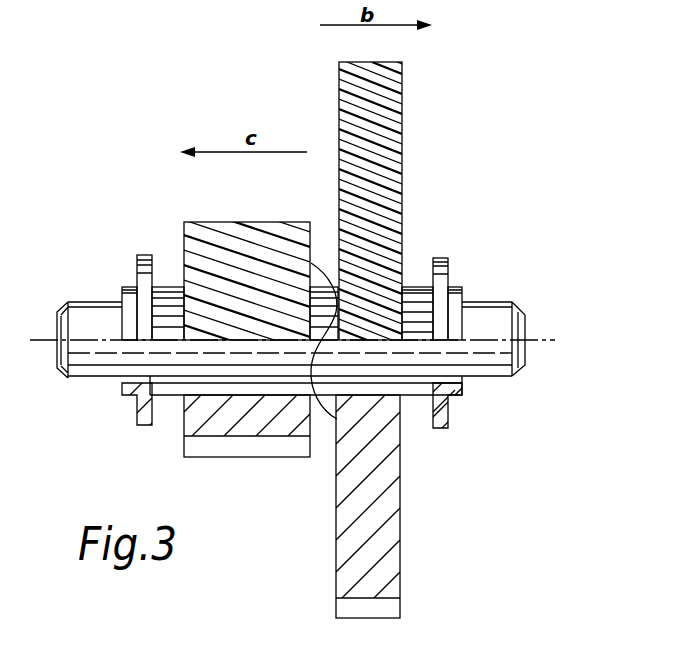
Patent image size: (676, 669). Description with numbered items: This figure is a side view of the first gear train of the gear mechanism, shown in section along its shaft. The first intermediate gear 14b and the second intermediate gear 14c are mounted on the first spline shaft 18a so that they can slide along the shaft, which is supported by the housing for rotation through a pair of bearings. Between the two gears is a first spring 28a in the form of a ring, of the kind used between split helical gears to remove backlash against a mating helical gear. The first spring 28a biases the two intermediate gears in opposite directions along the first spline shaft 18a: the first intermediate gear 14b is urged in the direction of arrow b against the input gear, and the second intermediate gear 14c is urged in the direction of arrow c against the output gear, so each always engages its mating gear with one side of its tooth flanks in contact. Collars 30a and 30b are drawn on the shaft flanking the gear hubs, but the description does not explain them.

The first intermediate gear 14b is at (399, 114).
The second intermediate gear 14c is at (223, 227).
The first spline shaft 18a is at (526, 316).
The first spring 28a is at (337, 419).
The nut 30a is at (448, 259).
The nut 30b is at (138, 257).